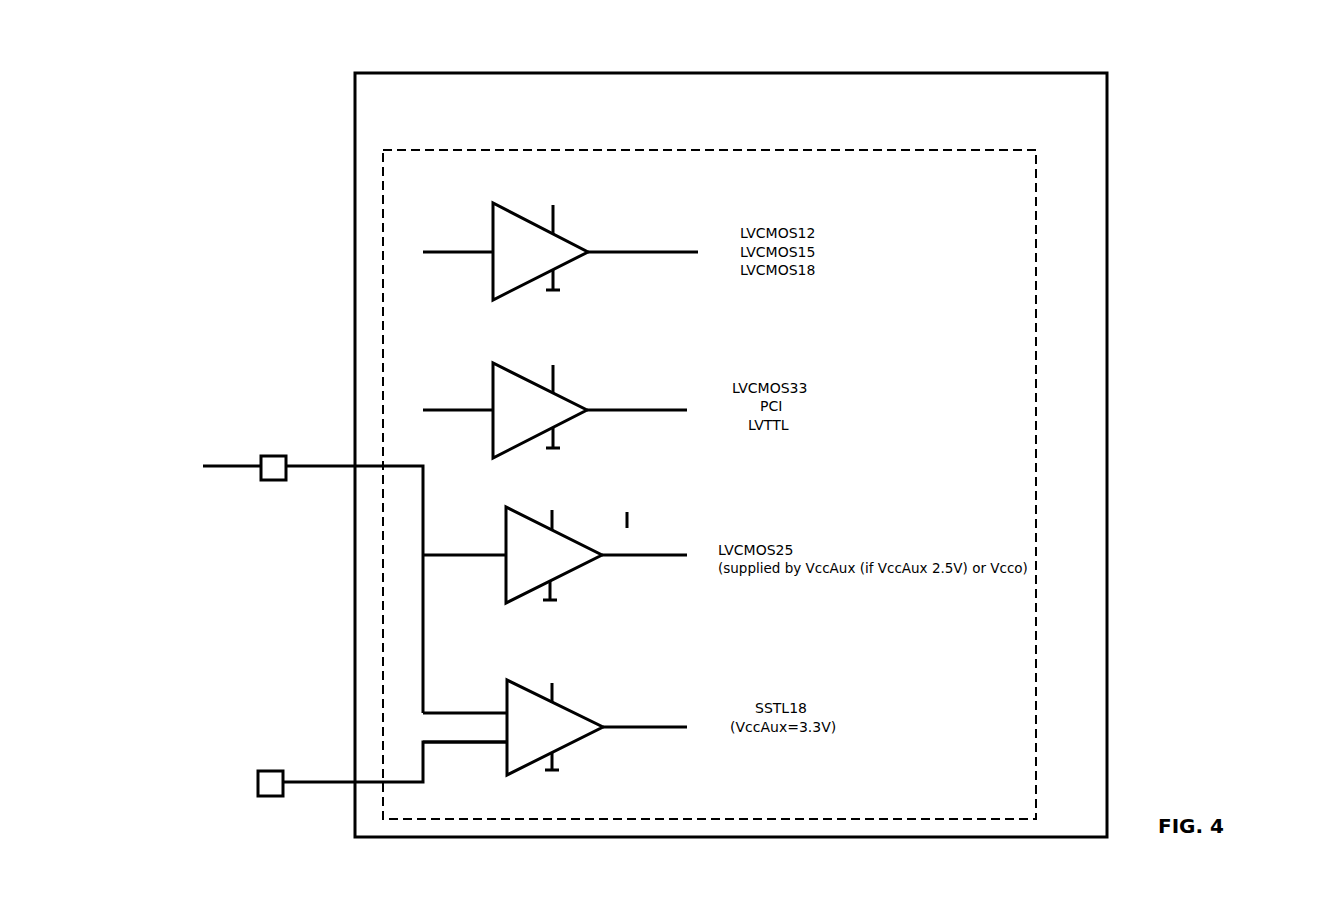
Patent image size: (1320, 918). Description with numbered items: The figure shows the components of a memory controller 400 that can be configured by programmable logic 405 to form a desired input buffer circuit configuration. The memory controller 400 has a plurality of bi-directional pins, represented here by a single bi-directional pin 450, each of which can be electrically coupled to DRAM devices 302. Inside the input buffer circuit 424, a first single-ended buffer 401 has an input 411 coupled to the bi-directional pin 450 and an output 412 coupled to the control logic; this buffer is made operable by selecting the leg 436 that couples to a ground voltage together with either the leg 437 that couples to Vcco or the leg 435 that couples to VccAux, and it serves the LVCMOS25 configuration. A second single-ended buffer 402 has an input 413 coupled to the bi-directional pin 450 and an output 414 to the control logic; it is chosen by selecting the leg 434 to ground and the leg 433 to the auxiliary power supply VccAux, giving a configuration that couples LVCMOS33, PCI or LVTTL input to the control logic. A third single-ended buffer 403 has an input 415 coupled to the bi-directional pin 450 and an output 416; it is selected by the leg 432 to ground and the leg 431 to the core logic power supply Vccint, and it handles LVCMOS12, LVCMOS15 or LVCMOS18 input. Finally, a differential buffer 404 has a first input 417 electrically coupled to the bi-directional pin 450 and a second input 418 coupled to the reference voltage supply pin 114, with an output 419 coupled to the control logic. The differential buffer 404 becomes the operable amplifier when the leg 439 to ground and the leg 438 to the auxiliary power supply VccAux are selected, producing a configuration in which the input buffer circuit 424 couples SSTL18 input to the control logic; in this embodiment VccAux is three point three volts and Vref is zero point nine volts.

The memory controller 400 is at (223, 67).
The input buffer circuit 424 is at (1088, 473).
The programmable logic 405 is at (1036, 722).
The leg coupling to core logic power supply 431 is at (232, 466).
The DRAM devices 302 is at (142, 462).
The bi-directional pin 450 is at (271, 466).
The reference voltage supply pin 114 is at (270, 782).
The third single-ended buffer 403 is at (566, 250).
The second single-ended buffer 402 is at (565, 408).
The first single-ended buffer 401 is at (586, 560).
The differential buffer 404 is at (570, 732).
The input of third single-ended buffer 415 is at (438, 250).
The output of third single-ended buffer 416 is at (648, 252).
The input of second single-ended buffer 413 is at (446, 408).
The output of second single-ended buffer 414 is at (648, 410).
The input of first single-ended buffer 411 is at (452, 553).
The output of first single-ended buffer 412 is at (660, 555).
The first input of differential buffer 417 is at (452, 711).
The second input of differential buffer 418 is at (458, 744).
The output of differential buffer 419 is at (660, 727).
The leg coupling to ground voltage 432 is at (560, 278).
The leg coupling to auxiliary power supply 433 is at (560, 388).
The leg coupling to ground voltage 434 is at (558, 438).
The leg coupling to VccAux 435 is at (555, 528).
The leg coupling to ground voltage 436 is at (555, 587).
The leg coupling to Vcco 437 is at (630, 525).
The leg coupling to auxiliary power supply 438 is at (556, 698).
The leg coupling to ground voltage 439 is at (556, 763).